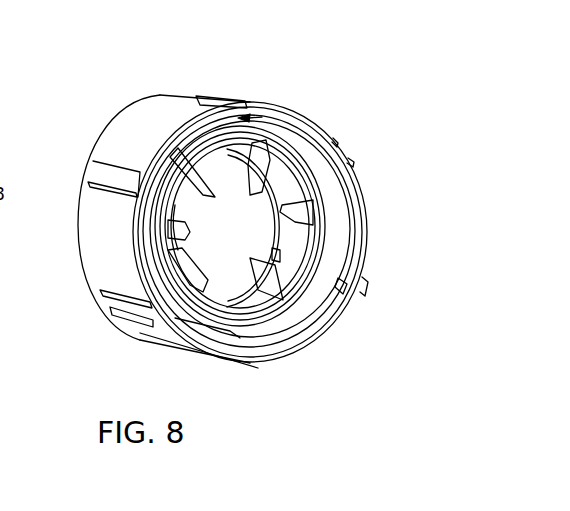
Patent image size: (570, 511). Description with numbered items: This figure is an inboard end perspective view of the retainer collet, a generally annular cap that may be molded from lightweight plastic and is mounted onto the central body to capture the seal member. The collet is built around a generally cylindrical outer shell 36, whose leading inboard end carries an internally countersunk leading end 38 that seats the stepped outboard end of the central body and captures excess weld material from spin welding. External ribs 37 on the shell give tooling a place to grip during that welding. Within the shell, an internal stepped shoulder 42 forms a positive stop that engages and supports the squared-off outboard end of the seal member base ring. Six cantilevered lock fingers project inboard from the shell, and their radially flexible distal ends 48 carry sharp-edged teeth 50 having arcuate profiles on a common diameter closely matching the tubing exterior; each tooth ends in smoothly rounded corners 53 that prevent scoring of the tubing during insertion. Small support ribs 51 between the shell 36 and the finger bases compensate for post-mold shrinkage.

The outer shell 36 is at (152, 127).
The external ribs 37 is at (208, 94).
The internally countersunk leading end 38 is at (344, 284).
The internal stepped shoulder 42 is at (312, 172).
The distal ends of the lock fingers 48 is at (280, 173).
The sharp-edged teeth 50 is at (172, 217).
The support ribs 51 is at (258, 368).
The smoothly rounded corners 53 is at (177, 153).